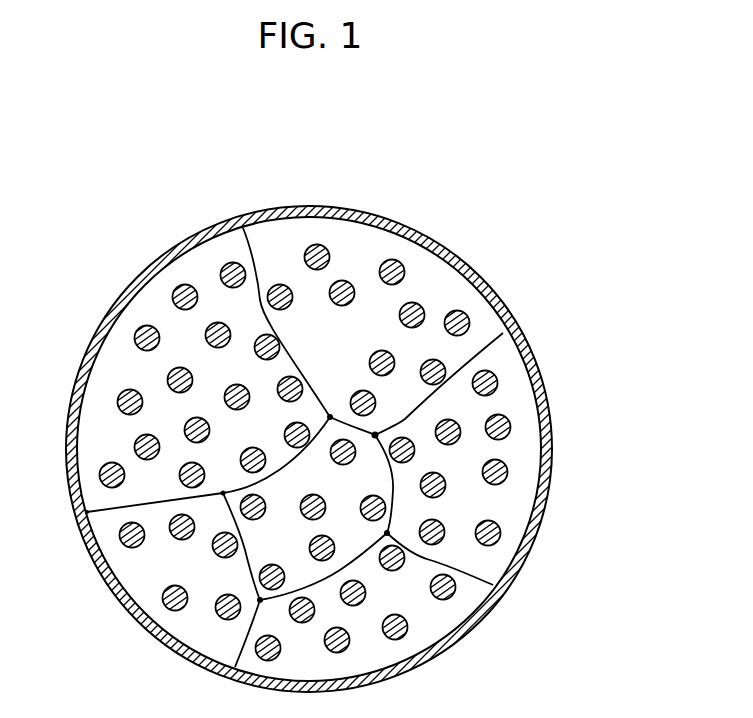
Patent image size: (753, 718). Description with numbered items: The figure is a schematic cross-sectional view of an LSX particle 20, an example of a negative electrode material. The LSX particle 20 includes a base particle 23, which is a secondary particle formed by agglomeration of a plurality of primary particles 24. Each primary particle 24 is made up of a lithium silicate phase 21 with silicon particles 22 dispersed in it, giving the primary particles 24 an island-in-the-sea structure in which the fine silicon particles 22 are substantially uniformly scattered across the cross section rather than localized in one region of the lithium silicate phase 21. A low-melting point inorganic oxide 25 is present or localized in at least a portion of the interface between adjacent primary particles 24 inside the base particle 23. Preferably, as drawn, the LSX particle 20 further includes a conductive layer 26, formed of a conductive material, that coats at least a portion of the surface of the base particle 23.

The LSX particle 20 is at (462, 182).
The lithium silicate phase 21 is at (512, 500).
The silicon particles 22 is at (508, 415).
The base particle 23 is at (122, 297).
The primary particles 24 is at (100, 402).
The low-melting point inorganic oxide 25 is at (268, 263).
The conductive layer 26 is at (525, 557).